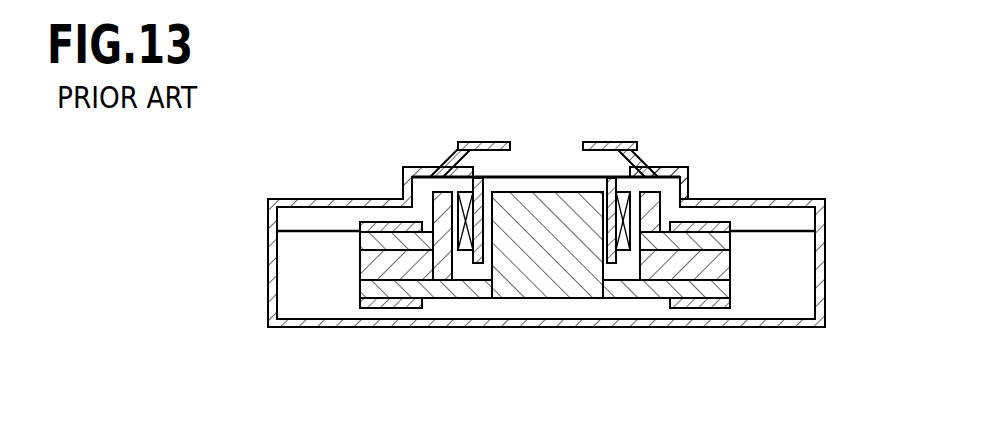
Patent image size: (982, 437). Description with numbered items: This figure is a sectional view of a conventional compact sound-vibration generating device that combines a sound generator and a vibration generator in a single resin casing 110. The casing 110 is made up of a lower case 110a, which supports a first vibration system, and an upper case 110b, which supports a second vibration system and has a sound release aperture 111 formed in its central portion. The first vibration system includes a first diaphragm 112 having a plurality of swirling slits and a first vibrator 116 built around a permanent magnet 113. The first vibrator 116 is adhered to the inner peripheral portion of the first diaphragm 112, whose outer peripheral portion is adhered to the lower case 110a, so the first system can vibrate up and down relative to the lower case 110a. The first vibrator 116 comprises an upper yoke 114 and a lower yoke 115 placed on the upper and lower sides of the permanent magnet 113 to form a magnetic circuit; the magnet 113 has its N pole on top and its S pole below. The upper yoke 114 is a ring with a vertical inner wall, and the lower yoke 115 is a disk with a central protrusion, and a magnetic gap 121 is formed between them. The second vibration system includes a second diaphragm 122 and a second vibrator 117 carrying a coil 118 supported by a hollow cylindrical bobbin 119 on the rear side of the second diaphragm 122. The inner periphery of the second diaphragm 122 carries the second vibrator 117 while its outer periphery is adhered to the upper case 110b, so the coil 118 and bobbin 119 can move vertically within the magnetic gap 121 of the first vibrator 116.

The resin casing 110 is at (182, 215).
The lower case 110a is at (297, 323).
The upper case 110b is at (268, 205).
The sound release aperture 111 is at (508, 144).
The first diaphragm 112 is at (790, 232).
The permanent magnet 113 is at (718, 263).
The upper yoke 114 is at (656, 221).
The lower yoke 115 is at (568, 283).
The first vibrator 116 is at (512, 302).
The second vibrator 117 is at (624, 152).
The coil 118 is at (627, 188).
The bobbin 119 is at (594, 177).
The magnetic gap 121 is at (630, 267).
The second diaphragm 122 is at (470, 176).